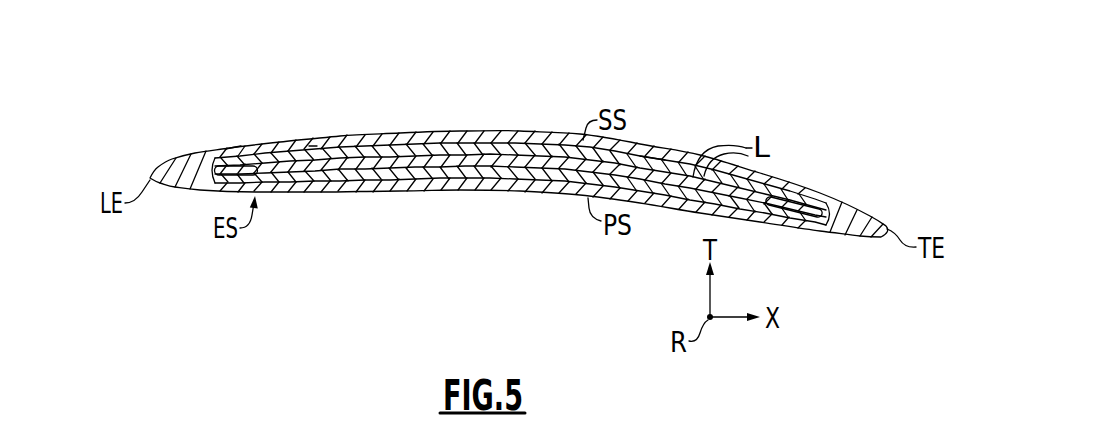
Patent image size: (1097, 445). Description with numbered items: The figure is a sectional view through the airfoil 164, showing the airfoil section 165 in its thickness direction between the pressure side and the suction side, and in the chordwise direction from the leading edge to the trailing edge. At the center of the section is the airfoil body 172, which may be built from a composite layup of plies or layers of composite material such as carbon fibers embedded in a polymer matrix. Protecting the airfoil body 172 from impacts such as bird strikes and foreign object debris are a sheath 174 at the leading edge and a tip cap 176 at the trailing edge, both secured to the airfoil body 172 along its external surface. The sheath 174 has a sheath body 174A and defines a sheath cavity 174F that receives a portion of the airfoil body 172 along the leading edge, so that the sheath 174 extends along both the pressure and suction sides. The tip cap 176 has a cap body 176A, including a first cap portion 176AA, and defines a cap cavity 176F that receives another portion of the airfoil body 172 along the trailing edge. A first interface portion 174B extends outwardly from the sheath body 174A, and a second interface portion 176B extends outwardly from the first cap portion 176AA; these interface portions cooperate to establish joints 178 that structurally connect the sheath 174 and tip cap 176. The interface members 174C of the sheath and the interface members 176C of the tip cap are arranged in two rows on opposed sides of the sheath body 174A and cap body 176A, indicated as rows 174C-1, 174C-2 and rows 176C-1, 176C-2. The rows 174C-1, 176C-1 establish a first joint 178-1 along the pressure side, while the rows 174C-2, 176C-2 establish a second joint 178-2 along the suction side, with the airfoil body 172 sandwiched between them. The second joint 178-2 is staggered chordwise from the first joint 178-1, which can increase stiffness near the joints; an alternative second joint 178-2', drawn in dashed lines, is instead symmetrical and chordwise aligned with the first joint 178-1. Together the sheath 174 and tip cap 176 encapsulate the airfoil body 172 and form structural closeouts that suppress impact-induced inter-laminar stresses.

The airfoil 164 is at (140, 106).
The airfoil section 165 is at (232, 142).
The airfoil body 172 is at (655, 150).
The sheath 174 is at (185, 203).
The sheath body 174A is at (198, 192).
The first interface portion 174B is at (300, 192).
The interface members 174C is at (475, 242).
The first row of interface members 174C-1 is at (278, 190).
The second row of interface members 174C-2 is at (288, 147).
The sheath cavity 174F is at (262, 152).
The tip cap 176 is at (500, 125).
The cap body 176A is at (513, 140).
The first cap portion 176AA is at (531, 140).
The second interface portion 176B is at (348, 190).
The interface members 176C is at (512, 188).
The first row of interface members 176C-1 is at (367, 190).
The second row of interface members 176C-2 is at (345, 150).
The cap cavity 176F is at (425, 152).
The joint 178 is at (519, 155).
The first joint 178-1 is at (331, 190).
The second joint 178-2 is at (578, 141).
The second joint (alternative) 178-2' is at (353, 91).